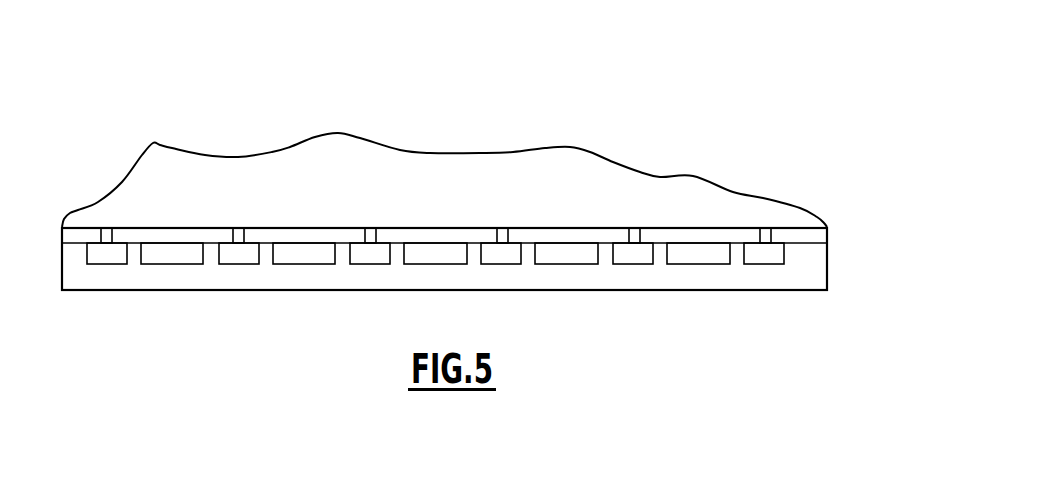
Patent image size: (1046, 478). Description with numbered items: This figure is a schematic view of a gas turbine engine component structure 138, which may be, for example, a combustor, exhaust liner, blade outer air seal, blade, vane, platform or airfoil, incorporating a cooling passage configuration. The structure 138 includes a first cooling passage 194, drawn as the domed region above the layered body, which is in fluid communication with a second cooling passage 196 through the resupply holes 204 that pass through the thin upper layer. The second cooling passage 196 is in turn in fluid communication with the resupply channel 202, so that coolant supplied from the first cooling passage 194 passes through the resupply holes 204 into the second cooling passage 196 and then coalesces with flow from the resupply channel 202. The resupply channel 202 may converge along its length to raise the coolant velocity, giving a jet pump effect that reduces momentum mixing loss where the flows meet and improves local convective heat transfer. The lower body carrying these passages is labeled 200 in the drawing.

The gas turbine engine component structure 138 is at (500, 179).
The first cooling passage 194 is at (527, 196).
The substrate 200 is at (500, 260).
The resupply holes 204 is at (245, 240).
The resupply channel 202 is at (220, 251).
The second cooling passage 196 is at (306, 258).